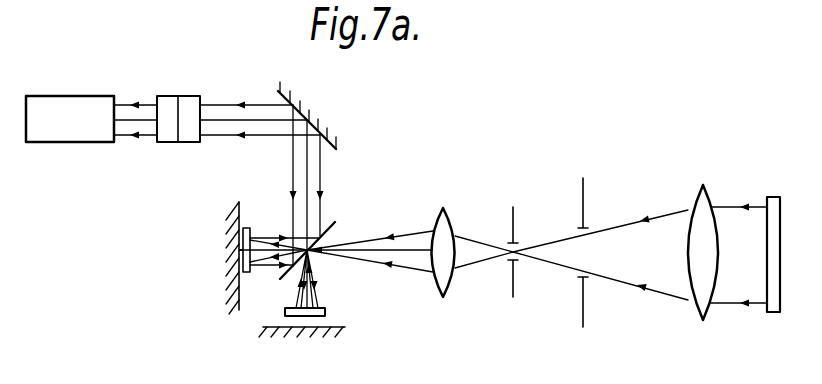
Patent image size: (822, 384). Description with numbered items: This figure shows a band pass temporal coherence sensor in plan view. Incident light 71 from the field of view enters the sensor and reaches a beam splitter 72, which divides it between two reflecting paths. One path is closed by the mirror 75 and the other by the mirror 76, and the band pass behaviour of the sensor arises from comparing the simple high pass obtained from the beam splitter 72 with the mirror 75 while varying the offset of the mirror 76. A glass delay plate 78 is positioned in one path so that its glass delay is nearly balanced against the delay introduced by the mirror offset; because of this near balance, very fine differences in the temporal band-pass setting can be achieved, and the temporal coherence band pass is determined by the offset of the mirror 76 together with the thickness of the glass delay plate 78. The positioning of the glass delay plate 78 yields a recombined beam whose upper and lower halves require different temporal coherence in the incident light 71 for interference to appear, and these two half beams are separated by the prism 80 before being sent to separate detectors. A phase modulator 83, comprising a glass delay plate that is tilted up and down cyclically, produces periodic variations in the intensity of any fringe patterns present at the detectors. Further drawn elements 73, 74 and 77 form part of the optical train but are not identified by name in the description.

The incident light 71 is at (758, 265).
The beam splitter 72 is at (333, 223).
The light beam 73 is at (268, 236).
The reflected light beam 74 is at (317, 277).
The mirror 75 is at (240, 292).
The mirror 76 is at (330, 329).
The mirror 77 is at (282, 95).
The glass delay plate 78 is at (238, 256).
The prism 80 is at (174, 100).
The phase modulator 83 is at (327, 313).